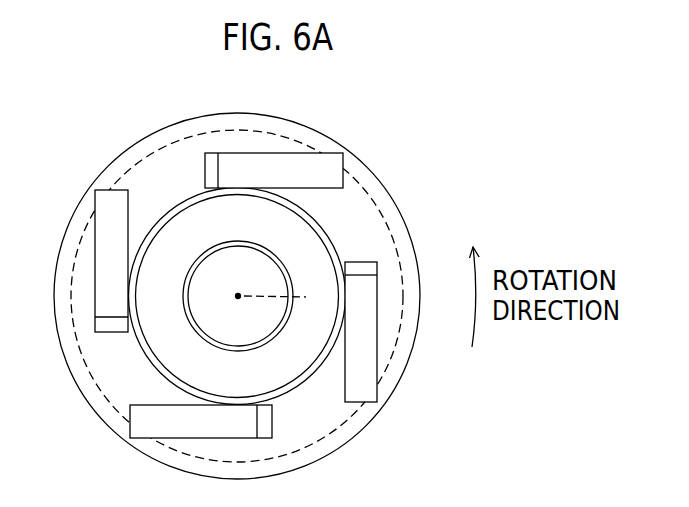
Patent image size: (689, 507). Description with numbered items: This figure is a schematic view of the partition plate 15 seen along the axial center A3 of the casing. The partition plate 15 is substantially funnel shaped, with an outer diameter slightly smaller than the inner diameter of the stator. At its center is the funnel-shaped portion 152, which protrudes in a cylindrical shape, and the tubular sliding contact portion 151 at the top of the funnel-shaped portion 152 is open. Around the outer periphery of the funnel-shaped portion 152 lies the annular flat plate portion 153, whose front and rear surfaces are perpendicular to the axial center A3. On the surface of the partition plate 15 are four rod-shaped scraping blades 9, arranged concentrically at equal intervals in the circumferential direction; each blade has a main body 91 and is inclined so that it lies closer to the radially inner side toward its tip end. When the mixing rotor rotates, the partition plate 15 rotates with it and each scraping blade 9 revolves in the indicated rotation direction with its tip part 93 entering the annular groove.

The partition plate 15 is at (133, 140).
The annular flat plate portion 153 is at (102, 378).
The funnel-shaped portion 152 is at (187, 328).
The tubular sliding contact portion 151 is at (212, 255).
The axial center A3 is at (288, 297).
The scraping blade 9 is at (243, 287).
The magnet main portion 91 is at (118, 283).
The tip part 93 is at (362, 270).